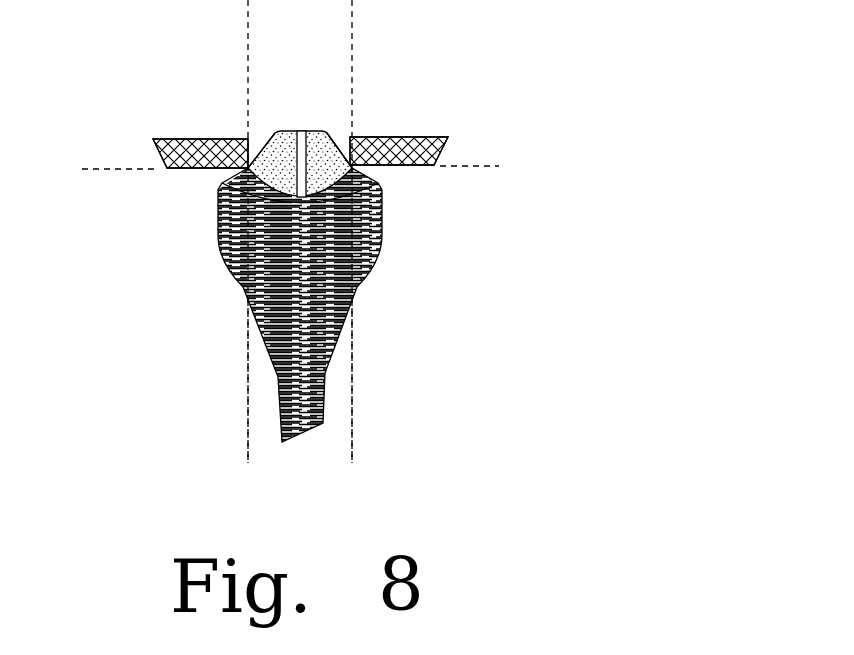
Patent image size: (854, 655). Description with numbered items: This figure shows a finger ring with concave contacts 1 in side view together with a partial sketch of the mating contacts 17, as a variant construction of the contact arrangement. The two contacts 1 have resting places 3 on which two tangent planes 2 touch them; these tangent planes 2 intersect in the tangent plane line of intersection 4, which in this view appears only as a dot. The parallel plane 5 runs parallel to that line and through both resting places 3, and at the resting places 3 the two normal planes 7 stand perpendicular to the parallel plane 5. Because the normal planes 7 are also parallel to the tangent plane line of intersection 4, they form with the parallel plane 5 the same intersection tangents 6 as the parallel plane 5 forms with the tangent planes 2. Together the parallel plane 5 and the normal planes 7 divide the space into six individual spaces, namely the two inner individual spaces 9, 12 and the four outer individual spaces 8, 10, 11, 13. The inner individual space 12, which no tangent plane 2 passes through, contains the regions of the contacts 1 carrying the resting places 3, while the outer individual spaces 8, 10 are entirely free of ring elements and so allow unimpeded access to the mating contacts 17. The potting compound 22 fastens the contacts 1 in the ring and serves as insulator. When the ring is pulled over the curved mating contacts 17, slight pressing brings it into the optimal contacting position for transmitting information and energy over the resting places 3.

The contacts 1 is at (323, 158).
The tangent planes 2 is at (226, 65).
The resting places 3 is at (247, 165).
The tangent plane line of intersection 4 is at (300, 129).
The parallel plane 5 is at (82, 170).
The intersection tangents 6 is at (210, 138).
The normal planes 7 is at (248, 462).
The outer individual space 8 is at (80, 44).
The inner individual space 9 is at (298, 13).
The outer individual space 10 is at (497, 39).
The outer individual space 11 is at (151, 353).
The inner individual space 12 is at (312, 471).
The outer individual space 13 is at (466, 346).
The mating contacts 17 is at (158, 147).
The potting compound 22 is at (298, 182).